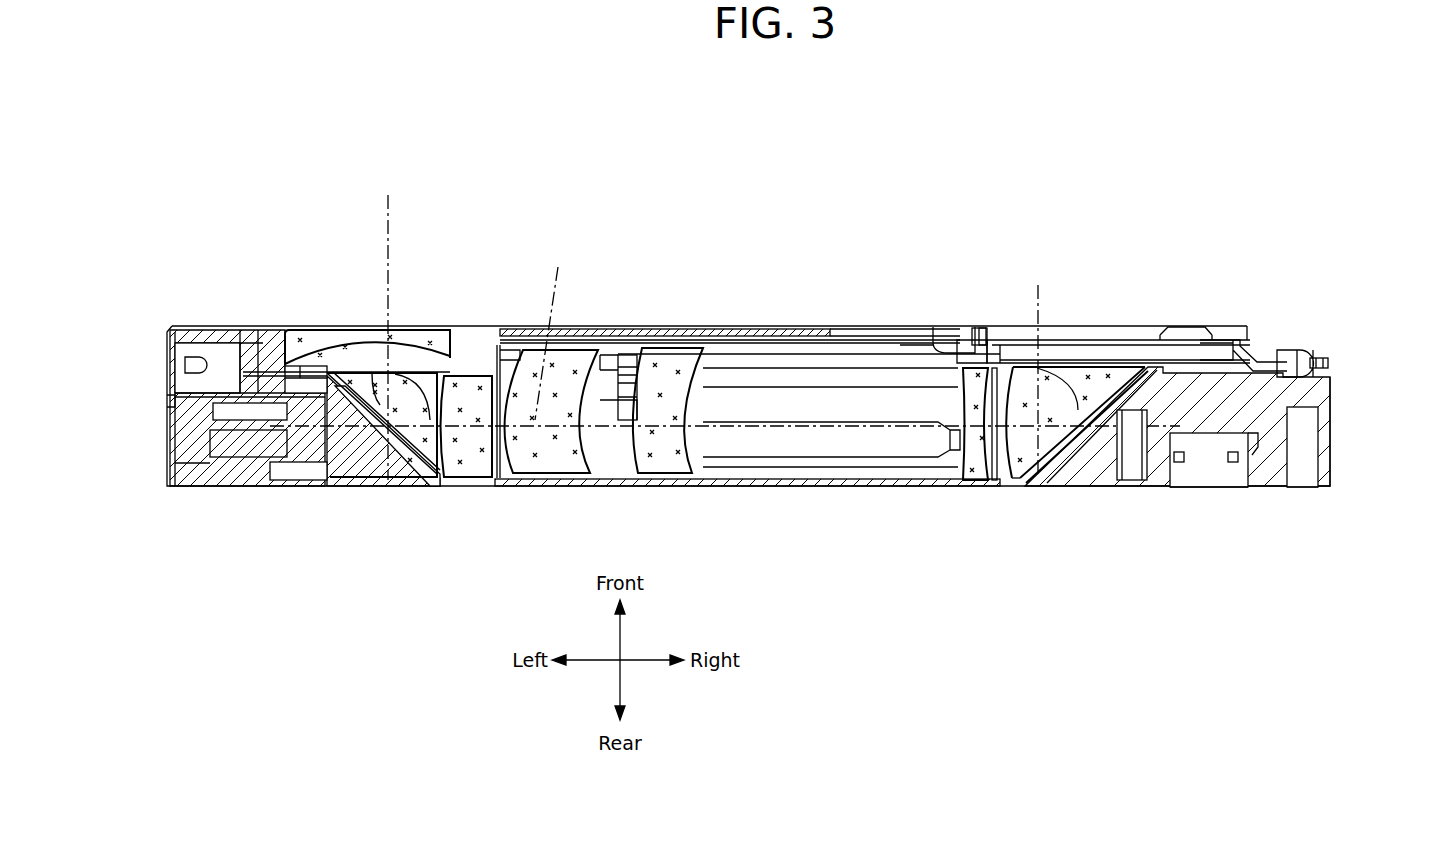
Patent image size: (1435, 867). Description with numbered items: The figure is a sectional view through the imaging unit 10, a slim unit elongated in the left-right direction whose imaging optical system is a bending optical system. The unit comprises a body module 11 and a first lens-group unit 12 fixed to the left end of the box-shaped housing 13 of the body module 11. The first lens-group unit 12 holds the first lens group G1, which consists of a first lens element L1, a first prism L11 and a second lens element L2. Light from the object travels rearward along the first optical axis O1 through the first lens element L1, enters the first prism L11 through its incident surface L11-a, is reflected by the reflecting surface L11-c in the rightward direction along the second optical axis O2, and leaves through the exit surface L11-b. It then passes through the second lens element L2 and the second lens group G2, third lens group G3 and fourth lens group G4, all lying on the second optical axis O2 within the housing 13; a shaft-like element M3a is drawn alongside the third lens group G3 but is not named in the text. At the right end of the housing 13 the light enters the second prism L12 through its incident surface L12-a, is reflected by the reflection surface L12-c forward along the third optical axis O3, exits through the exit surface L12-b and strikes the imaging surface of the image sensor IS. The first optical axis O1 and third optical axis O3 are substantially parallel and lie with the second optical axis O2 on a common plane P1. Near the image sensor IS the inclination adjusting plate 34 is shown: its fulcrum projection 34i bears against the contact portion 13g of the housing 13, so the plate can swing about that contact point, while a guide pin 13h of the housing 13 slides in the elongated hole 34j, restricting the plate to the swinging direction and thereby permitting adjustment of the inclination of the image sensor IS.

The imaging unit 10 is at (950, 185).
The body module 11 is at (765, 305).
The first lens-group unit 12 is at (212, 300).
The housing 13 is at (1212, 420).
The contact portion 13g is at (935, 340).
The guide pin 13h is at (1300, 340).
The inclination adjusting plate 34 is at (1331, 326).
The fulcrum projection 34i is at (975, 340).
The elongated hole 34j is at (1313, 377).
The image sensor IS is at (1070, 340).
The common plane P1 is at (677, 172).
The first optical axis O1 is at (392, 242).
The second optical axis O2 is at (552, 331).
The third optical axis O3 is at (1036, 369).
The first lens group G1 is at (405, 419).
The first lens element L1 is at (405, 395).
The first prism L11 is at (426, 395).
The incident surface L11-a is at (418, 330).
The exit surface L11-b is at (445, 330).
The reflecting surface L11-c is at (355, 330).
The second lens element L2 is at (458, 454).
The second lens group G2 is at (552, 460).
The third lens group G3 is at (660, 463).
The third group drive shaft M3a is at (807, 443).
The fourth lens group G4 is at (975, 470).
The second prism L12 is at (1075, 424).
The incident surface L12-a is at (1002, 438).
The exit surface L12-b is at (1130, 340).
The reflection surface L12-c is at (1110, 395).